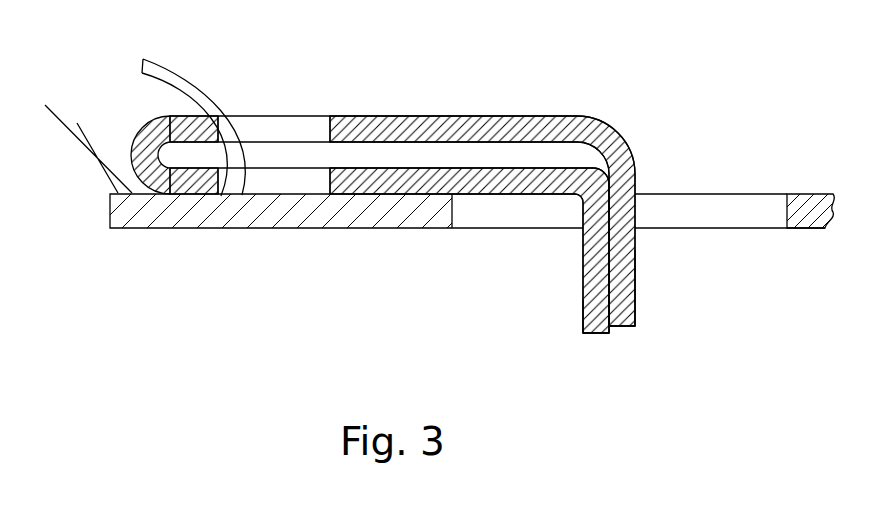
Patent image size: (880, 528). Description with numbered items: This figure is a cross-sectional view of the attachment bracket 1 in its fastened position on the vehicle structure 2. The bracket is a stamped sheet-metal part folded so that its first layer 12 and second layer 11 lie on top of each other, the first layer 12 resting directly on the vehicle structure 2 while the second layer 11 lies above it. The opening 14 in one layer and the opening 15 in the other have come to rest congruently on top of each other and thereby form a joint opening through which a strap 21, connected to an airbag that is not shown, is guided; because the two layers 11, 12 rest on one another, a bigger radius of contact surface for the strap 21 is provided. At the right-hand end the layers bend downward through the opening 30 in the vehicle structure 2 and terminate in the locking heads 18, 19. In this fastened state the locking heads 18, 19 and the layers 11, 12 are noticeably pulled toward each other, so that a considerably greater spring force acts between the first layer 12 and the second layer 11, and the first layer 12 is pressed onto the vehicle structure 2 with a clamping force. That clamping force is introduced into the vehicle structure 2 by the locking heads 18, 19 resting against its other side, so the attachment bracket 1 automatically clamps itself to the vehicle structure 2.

The attachment bracket 1 is at (362, 57).
The vehicle structure 2 is at (338, 222).
The second layer 11 is at (425, 121).
The first layer 12 is at (467, 183).
The opening 14 is at (272, 128).
The opening 15 is at (268, 187).
The locking head 18 is at (623, 295).
The locking head 19 is at (593, 327).
The strap 21 is at (102, 165).
The opening 30 is at (737, 215).